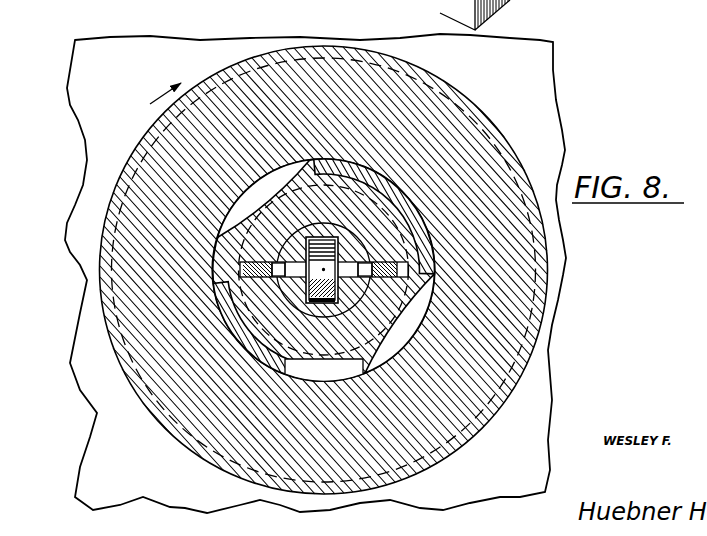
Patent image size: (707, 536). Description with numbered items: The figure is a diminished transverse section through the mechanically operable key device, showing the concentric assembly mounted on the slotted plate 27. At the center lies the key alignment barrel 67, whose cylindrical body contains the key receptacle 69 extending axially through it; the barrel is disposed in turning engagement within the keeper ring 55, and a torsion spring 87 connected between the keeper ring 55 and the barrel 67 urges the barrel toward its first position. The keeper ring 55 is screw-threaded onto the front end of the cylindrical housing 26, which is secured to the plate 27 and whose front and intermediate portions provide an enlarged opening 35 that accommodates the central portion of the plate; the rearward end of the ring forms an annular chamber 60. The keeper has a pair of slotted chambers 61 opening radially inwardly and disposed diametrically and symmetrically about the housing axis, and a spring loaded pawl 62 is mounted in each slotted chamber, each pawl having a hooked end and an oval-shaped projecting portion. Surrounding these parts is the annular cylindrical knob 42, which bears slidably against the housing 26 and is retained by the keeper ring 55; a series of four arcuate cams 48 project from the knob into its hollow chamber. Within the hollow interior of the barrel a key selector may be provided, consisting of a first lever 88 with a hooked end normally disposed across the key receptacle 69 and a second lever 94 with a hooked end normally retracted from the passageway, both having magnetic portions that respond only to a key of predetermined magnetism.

The plate 27 is at (540, 70).
The arcuate cams 48 is at (165, 138).
The annular cylindrical knob 42 is at (486, 431).
The enlarged opening 35 is at (262, 466).
The torsion spring 87 is at (497, 152).
The annular chamber 60 is at (222, 230).
The spring loaded pawl 62 is at (225, 280).
The housing 26 is at (223, 320).
The key receptacle 69 is at (354, 276).
The keeper ring 55 is at (243, 273).
The slotted chambers 61 is at (243, 262).
The key alignment barrel 67 is at (327, 235).
The first lever 88 is at (319, 235).
The second lever 94 is at (324, 306).